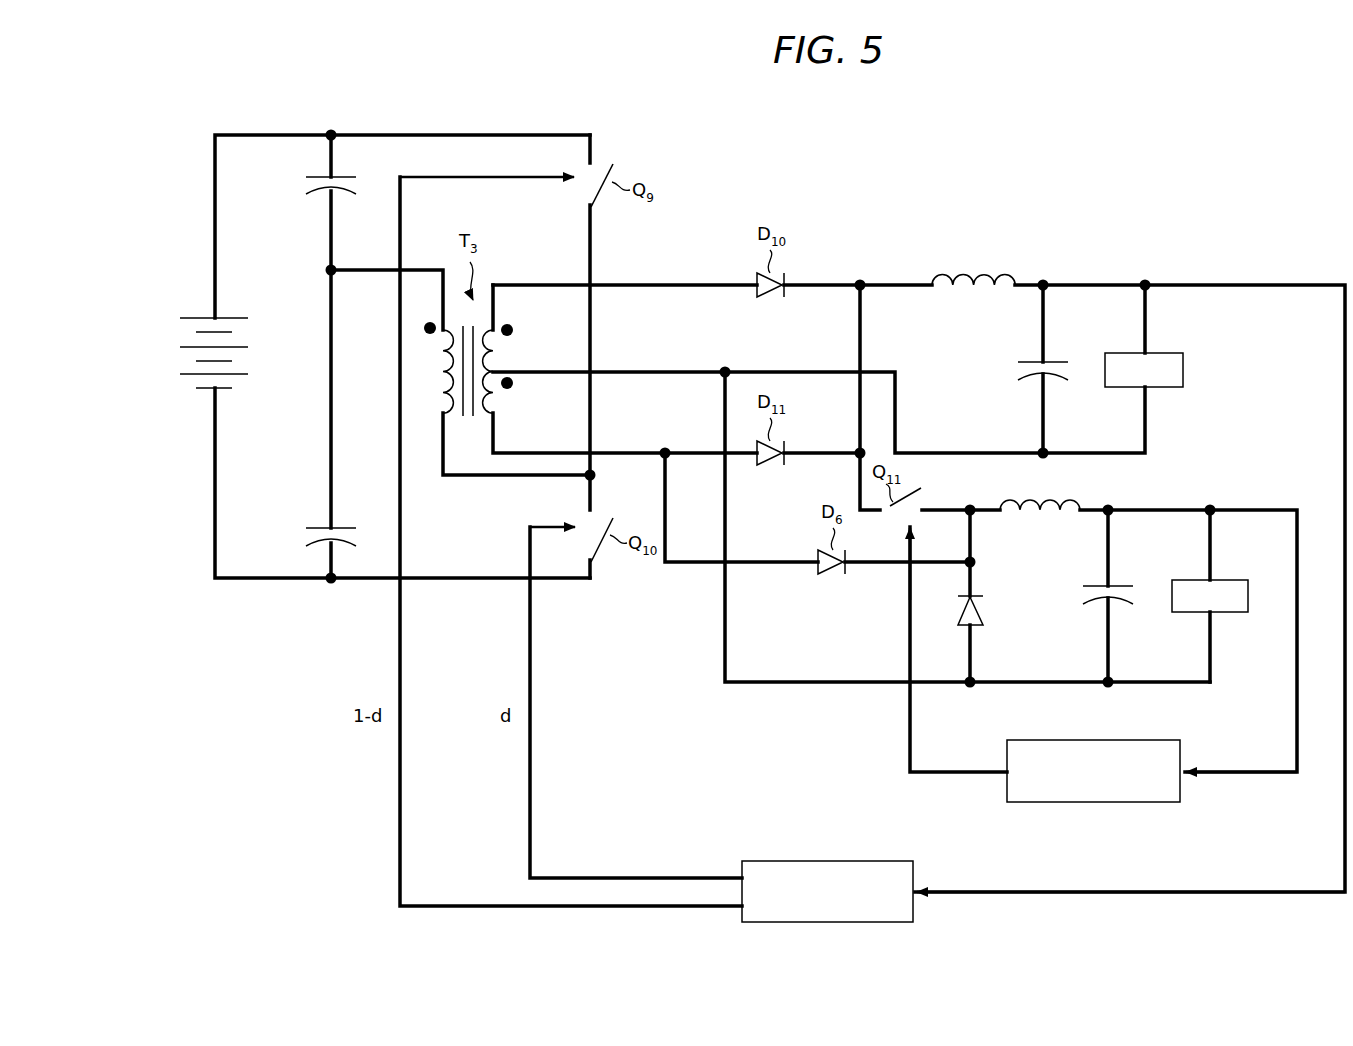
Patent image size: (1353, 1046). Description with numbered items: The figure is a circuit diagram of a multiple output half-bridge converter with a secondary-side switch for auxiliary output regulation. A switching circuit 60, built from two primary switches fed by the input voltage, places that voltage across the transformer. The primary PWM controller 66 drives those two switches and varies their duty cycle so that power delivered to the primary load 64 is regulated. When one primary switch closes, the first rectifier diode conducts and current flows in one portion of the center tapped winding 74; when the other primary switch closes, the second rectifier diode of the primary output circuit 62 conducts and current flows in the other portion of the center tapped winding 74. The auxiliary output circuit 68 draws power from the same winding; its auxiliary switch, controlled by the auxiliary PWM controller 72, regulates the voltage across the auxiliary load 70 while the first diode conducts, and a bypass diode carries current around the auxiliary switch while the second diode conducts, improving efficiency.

The switching circuit 60 is at (178, 202).
The primary output circuit 62 is at (1010, 248).
The primary load 64 is at (1184, 372).
The primary PWM controller 66 is at (831, 861).
The auxiliary output circuit 68 is at (1208, 474).
The auxiliary load 70 is at (1234, 580).
The auxiliary PWM controller 72 is at (1095, 740).
The center tapped winding 74 is at (514, 357).